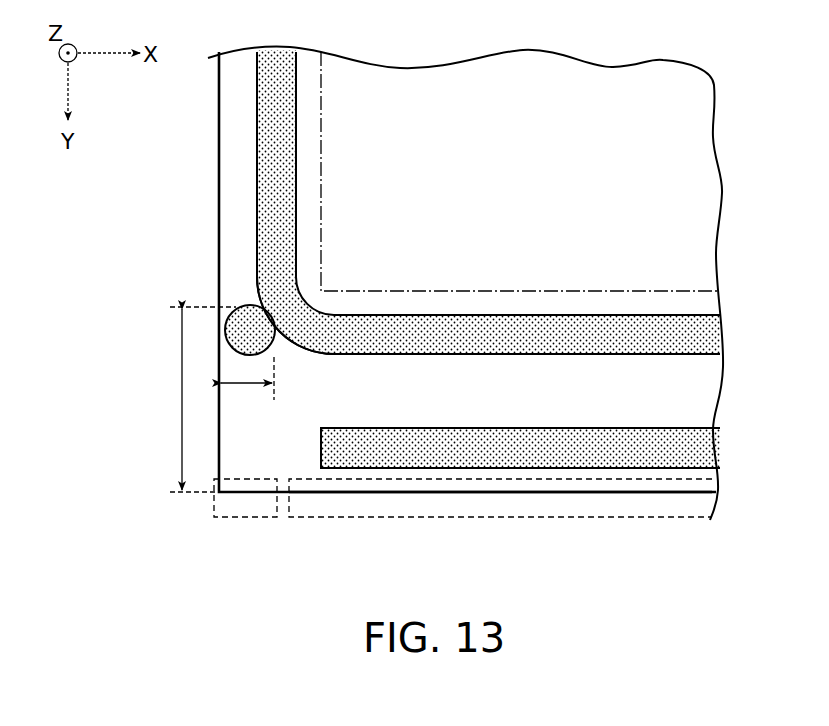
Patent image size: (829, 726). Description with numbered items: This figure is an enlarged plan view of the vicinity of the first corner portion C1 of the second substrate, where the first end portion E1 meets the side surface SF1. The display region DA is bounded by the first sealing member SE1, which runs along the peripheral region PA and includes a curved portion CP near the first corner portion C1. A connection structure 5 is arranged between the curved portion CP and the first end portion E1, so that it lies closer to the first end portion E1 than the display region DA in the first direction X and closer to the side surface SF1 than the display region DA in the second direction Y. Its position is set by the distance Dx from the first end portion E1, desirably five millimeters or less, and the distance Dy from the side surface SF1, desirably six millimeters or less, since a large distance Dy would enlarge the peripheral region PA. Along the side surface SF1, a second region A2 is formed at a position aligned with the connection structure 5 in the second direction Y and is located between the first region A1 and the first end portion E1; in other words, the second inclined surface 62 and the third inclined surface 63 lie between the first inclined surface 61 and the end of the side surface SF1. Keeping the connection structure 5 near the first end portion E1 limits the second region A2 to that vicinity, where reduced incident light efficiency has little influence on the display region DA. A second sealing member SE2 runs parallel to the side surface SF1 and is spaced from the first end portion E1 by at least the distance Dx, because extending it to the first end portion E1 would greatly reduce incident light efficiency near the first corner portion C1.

The first end portion E1 is at (216, 242).
The peripheral region PA is at (232, 140).
The display region DA is at (321, 118).
The first sealing member SE1 is at (258, 178).
The second sealing member SE2 is at (548, 428).
The curved portion CP is at (296, 353).
The connection structure 5 is at (247, 308).
The distance Dy is at (194, 399).
The distance Dx is at (247, 387).
The first corner portion C1 is at (208, 503).
The second region A2 is at (261, 535).
The second inclined surface 62 is at (245, 498).
The third inclined surface 63 is at (238, 518).
The first region A1 is at (500, 535).
The first inclined surface 61 is at (503, 520).
The side surface SF1 is at (384, 497).